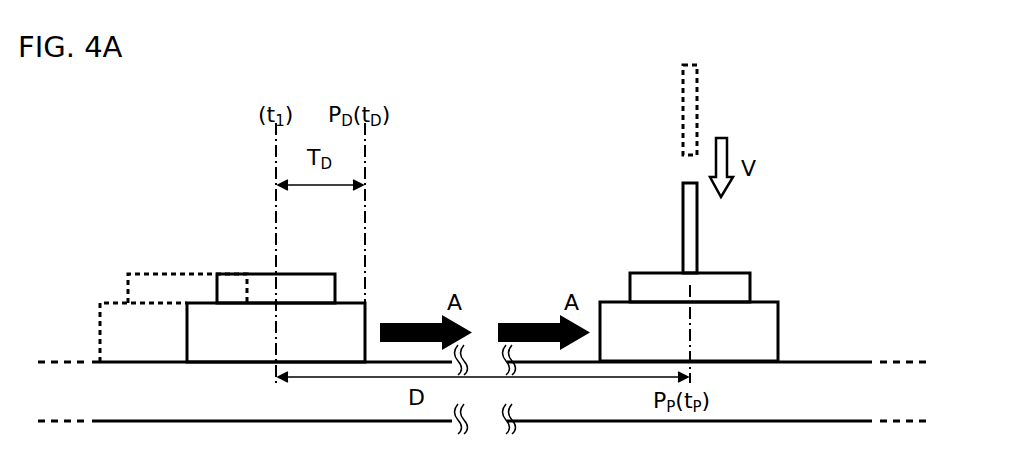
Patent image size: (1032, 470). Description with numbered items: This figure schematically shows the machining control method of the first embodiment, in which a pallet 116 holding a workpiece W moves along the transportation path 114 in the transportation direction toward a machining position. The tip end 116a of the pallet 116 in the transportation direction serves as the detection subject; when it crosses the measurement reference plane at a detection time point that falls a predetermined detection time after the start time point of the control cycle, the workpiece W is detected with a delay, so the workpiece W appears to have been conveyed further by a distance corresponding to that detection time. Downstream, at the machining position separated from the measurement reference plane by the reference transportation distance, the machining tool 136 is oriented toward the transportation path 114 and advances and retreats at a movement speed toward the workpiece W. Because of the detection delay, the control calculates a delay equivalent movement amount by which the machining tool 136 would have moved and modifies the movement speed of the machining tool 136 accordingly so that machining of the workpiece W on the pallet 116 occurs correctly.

The transportation path 114 is at (146, 352).
The pallet 116 is at (202, 300).
The tip end 116a is at (370, 300).
The machining tool 136 is at (683, 213).
The workpiece W is at (262, 273).